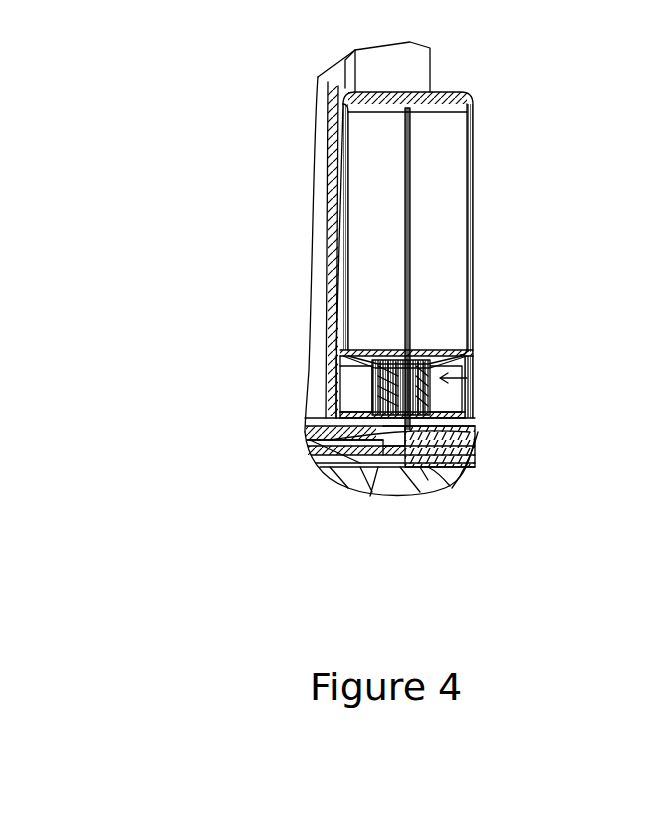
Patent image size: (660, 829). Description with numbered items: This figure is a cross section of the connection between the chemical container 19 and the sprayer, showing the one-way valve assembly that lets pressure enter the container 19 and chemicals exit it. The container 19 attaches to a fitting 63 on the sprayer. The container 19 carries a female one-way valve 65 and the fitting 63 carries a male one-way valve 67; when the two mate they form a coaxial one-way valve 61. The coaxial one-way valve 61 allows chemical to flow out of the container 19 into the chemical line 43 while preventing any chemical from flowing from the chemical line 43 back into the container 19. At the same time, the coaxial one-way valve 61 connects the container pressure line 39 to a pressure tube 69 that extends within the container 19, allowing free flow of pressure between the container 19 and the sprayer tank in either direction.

The container 19 is at (453, 92).
The pressure tube 69 is at (413, 230).
The female one-way valve 65 is at (423, 353).
The coaxial one-way valve 61 is at (472, 372).
The male one-way valve 67 is at (470, 444).
The container pressure line 39 is at (473, 468).
The chemical line 43 is at (318, 438).
The fitting 63 is at (418, 465).